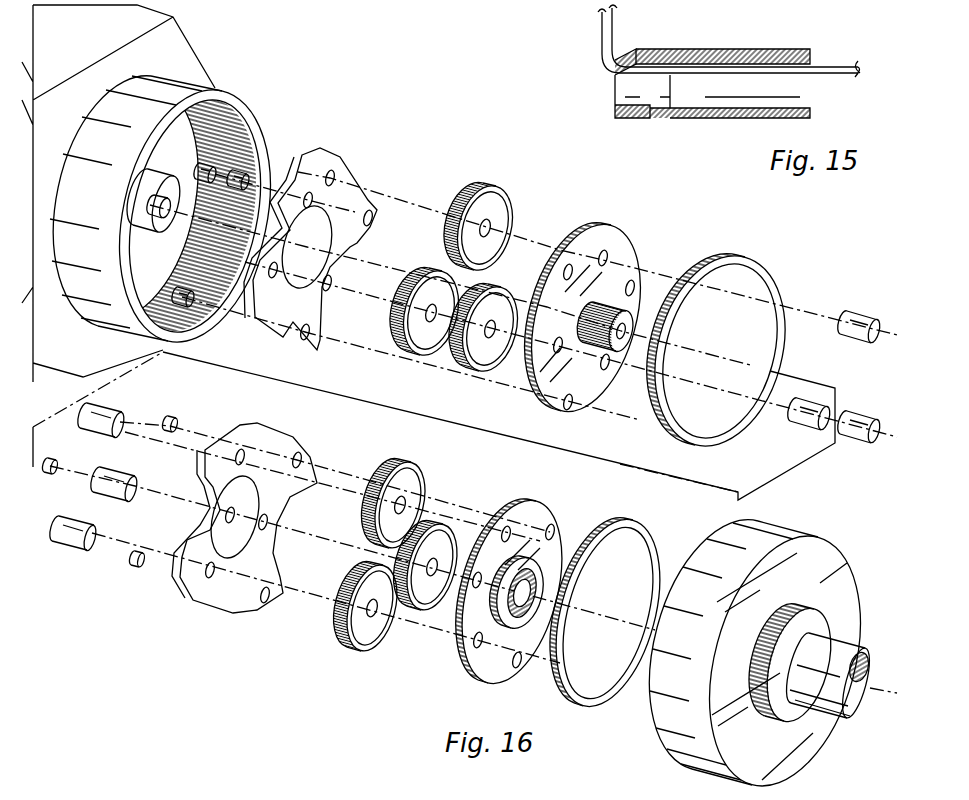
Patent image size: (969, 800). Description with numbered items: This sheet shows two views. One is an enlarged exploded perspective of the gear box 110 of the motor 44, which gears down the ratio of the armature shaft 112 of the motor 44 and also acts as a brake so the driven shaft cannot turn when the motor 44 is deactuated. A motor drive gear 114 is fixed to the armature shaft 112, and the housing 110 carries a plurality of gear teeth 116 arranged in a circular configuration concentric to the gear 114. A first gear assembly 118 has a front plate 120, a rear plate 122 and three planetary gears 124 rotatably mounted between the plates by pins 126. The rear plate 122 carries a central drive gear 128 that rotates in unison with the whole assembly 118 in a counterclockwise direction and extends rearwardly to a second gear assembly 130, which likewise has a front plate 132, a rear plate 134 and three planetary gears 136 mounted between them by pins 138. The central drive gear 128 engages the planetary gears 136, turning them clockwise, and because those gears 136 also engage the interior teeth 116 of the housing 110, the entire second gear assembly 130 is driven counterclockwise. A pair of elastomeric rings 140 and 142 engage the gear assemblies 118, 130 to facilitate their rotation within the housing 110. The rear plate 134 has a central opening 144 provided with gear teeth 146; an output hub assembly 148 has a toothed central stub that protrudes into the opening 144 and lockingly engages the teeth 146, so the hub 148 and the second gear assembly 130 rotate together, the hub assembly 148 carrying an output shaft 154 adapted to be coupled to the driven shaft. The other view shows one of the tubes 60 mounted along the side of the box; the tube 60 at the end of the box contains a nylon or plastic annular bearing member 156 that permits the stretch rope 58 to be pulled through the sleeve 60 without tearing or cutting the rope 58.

In FIG. 16, the motor 44 is at (428, 252).
In FIG. 16, the gear box 110 is at (178, 213).
In FIG. 16, the gear teeth 116 is at (252, 197).
In FIG. 16, the armature shaft 112 is at (133, 190).
In FIG. 16, the motor drive gear 114 is at (132, 193).
In FIG. 16, the front plate 120 is at (324, 248).
In FIG. 16, the first gear assembly 118 is at (467, 254).
In FIG. 16, the planetary gears 124 is at (454, 228).
In FIG. 16, the rear plate 122 is at (598, 317).
In FIG. 16, the central drive gear 128 is at (651, 328).
In FIG. 16, the elastomeric ring 140 is at (733, 350).
In FIG. 16, the pins 126 is at (840, 377).
In FIG. 16, the pins 138 is at (110, 485).
In FIG. 16, the front plate 132 is at (216, 522).
In FIG. 16, the planetary gears 136 is at (384, 557).
In FIG. 16, the rear plate 134 is at (491, 593).
In FIG. 16, the central opening 144 is at (555, 593).
In FIG. 16, the gear teeth 146 is at (555, 608).
In FIG. 16, the elastomeric ring 142 is at (615, 613).
In FIG. 16, the output hub assembly 148 is at (747, 659).
In FIG. 16, the output shaft 154 is at (812, 690).
In FIG. 16, the second gear assembly 130 is at (367, 560).
In FIG. 15, the stretch rope 58 is at (701, 47).
In FIG. 15, the tube 60 is at (717, 106).
In FIG. 15, the annular bearing member 156 is at (642, 119).